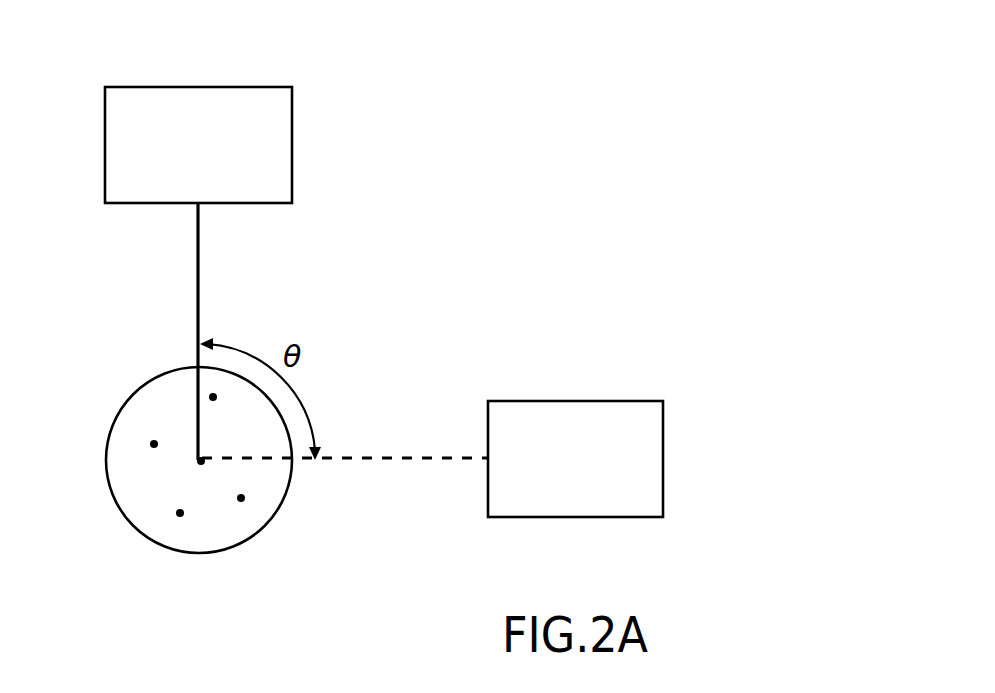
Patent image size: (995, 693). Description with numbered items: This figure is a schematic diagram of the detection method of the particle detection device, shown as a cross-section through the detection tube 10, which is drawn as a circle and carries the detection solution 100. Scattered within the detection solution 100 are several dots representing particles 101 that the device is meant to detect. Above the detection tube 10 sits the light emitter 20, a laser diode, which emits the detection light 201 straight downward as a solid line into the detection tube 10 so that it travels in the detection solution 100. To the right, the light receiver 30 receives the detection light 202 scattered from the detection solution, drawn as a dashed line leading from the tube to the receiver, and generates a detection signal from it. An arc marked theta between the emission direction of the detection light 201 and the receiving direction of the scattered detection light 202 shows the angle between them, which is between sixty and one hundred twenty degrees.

The detection tube 10 is at (106, 458).
The detection solution 100 is at (165, 410).
The particles 101 is at (180, 513).
The light emitter 20 is at (212, 87).
The detection light 201 is at (197, 280).
The scattered detection light 202 is at (357, 458).
The light receiver 30 is at (588, 401).